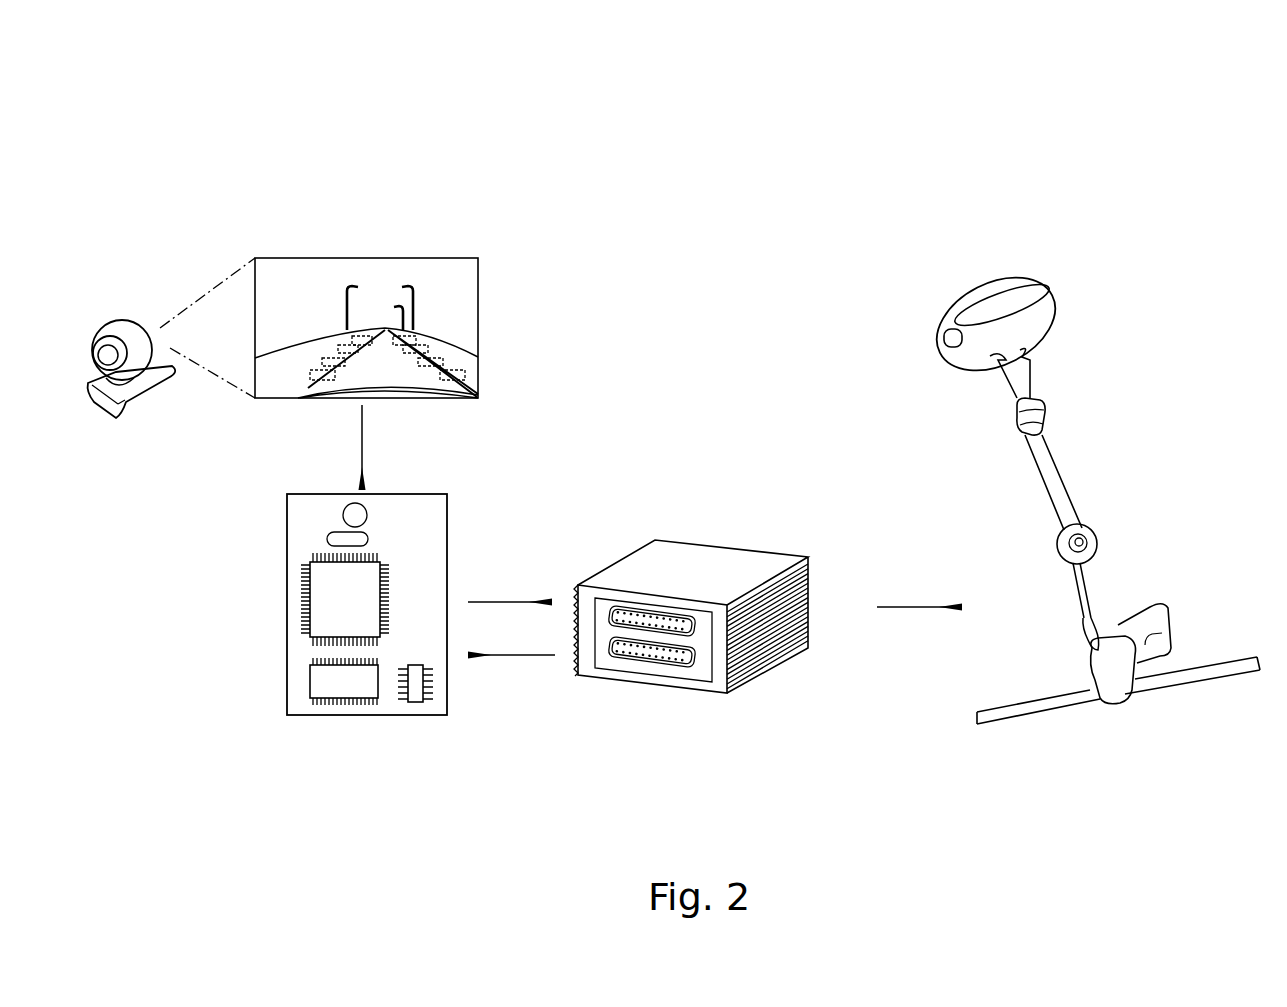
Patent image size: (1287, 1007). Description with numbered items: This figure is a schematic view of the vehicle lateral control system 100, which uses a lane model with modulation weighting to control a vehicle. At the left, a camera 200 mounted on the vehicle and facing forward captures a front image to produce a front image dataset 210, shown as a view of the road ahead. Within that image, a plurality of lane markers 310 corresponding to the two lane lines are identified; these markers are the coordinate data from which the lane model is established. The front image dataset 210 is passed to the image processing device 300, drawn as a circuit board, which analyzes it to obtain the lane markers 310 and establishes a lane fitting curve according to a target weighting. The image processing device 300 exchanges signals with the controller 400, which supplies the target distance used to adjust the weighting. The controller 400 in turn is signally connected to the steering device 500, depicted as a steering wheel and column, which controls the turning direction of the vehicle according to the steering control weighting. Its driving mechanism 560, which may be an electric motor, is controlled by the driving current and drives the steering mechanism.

The vehicle lateral control system 100 is at (115, 106).
The camera 200 is at (122, 328).
The front image dataset 210 is at (365, 258).
The lane markers 310 is at (445, 348).
The image processing device 300 is at (287, 540).
The controller 400 is at (708, 556).
The steering device 500 is at (1078, 467).
The driving mechanism 560 is at (1155, 643).